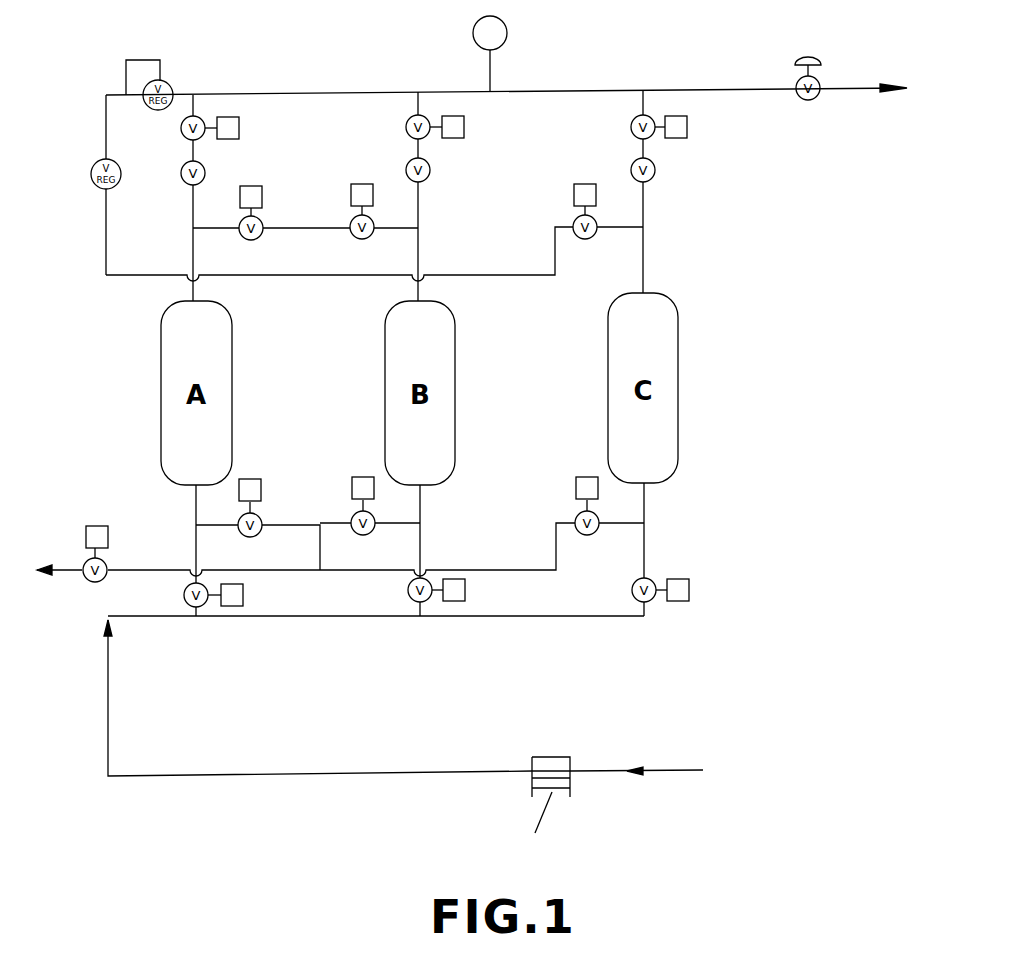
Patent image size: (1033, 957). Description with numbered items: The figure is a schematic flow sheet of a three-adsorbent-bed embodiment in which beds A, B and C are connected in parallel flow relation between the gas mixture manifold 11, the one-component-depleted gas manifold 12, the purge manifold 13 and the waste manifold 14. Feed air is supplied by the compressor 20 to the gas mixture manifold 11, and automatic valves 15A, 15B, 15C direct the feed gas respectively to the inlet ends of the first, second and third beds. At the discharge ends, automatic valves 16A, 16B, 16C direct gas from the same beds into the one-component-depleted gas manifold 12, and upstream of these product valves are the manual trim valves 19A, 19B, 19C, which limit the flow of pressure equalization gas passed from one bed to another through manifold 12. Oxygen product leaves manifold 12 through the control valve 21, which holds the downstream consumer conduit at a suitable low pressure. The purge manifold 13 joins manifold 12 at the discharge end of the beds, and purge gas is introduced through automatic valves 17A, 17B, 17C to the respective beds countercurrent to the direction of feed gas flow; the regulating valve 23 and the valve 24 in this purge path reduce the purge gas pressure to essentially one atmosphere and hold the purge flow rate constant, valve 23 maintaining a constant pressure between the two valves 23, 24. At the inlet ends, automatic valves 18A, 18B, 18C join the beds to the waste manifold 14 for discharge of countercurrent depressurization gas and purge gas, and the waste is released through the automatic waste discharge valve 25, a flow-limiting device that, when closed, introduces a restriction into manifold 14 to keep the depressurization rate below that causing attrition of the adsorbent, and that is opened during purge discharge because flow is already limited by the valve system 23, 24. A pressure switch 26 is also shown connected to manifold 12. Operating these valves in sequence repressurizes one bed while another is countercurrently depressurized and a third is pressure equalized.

The gas mixture manifold 11 is at (316, 618).
The one-component-depleted gas manifold 12 is at (380, 90).
The purge manifold 13 is at (528, 276).
The waste manifold 14 is at (492, 566).
The automatic valve 15A is at (184, 595).
The automatic valve 15B is at (408, 590).
The automatic valve 15C is at (632, 590).
The automatic valve 16A is at (181, 128).
The automatic valve 16B is at (406, 127).
The automatic valve 16C is at (631, 127).
The automatic valve 17A is at (244, 238).
The automatic valve 17B is at (354, 237).
The automatic valve 17C is at (579, 237).
The automatic valve 18A is at (242, 535).
The automatic valve 18B is at (354, 533).
The automatic valve 18C is at (580, 534).
The trim valve 19A is at (181, 173).
The trim valve 19B is at (406, 170).
The trim valve 19C is at (631, 170).
The compressor 20 is at (548, 757).
The control valve 21 is at (807, 101).
The regulating valve 23 is at (170, 86).
The valve 24 is at (91, 174).
The automatic waste discharge valve 25 is at (95, 584).
The pressure switch 26 is at (507, 33).